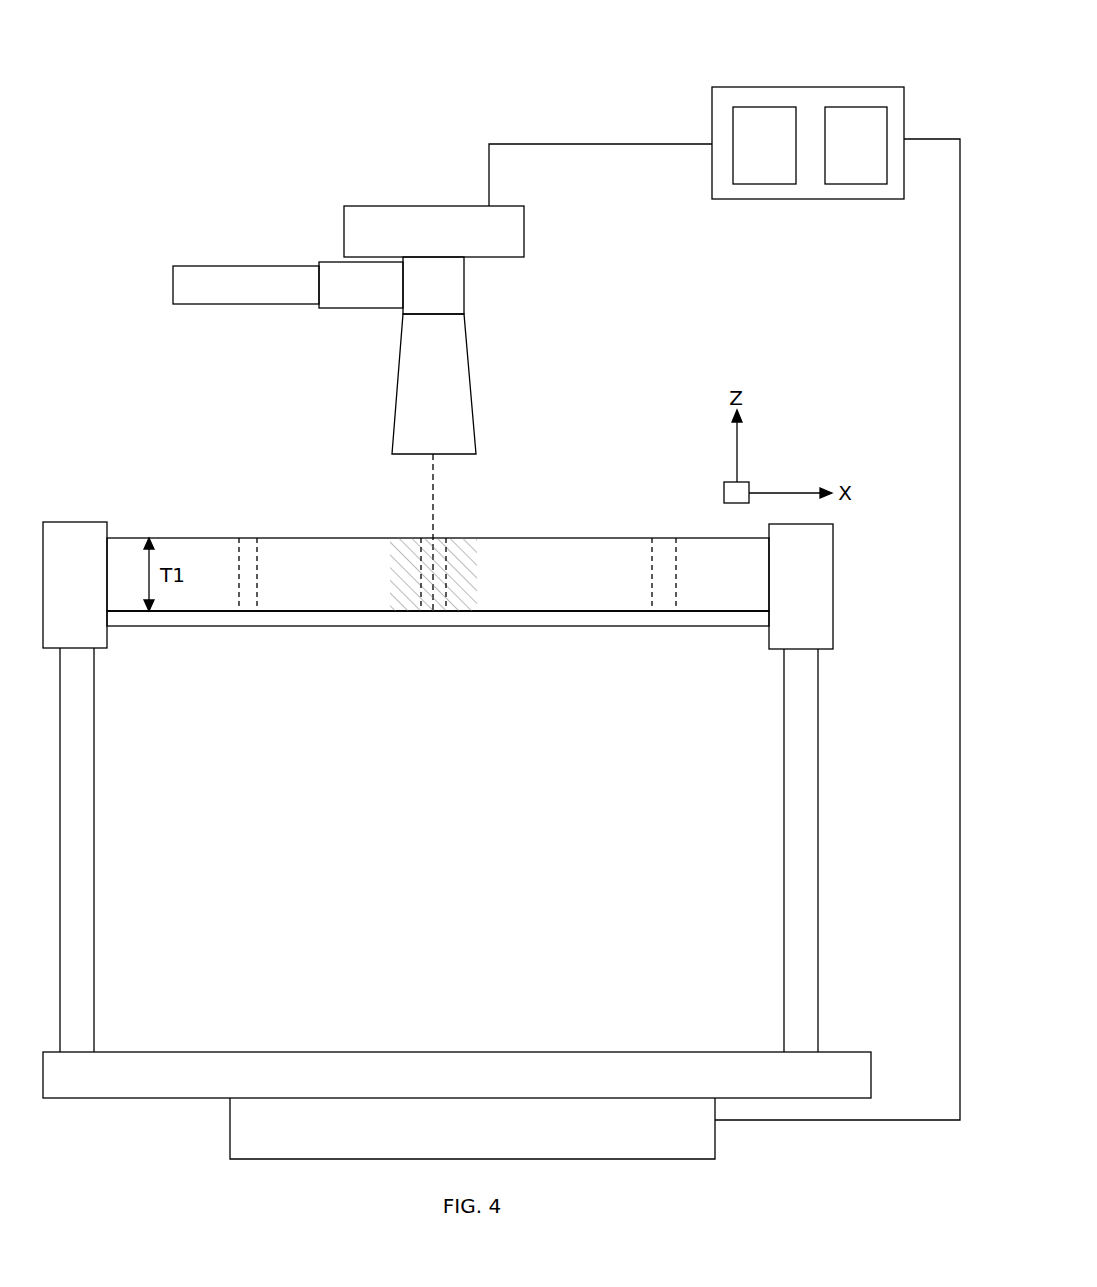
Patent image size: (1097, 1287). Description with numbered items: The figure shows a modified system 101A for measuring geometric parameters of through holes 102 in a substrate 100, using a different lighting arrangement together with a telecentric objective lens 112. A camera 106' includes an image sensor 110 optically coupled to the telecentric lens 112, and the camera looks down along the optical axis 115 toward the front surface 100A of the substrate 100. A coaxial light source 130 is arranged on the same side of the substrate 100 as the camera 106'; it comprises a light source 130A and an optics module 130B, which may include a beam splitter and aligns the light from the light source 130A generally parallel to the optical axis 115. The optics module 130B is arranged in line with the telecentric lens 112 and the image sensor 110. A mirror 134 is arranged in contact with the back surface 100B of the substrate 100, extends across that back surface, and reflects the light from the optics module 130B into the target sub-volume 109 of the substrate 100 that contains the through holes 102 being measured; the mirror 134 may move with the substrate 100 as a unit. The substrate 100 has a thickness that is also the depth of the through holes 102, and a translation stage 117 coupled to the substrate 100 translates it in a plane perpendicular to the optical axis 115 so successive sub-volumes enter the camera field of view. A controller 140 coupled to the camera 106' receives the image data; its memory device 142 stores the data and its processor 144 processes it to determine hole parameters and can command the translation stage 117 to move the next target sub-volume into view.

The modified system 101A is at (403, 158).
The camera 106' is at (567, 214).
The image sensor 110 is at (357, 230).
The telecentric objective lens 112 is at (463, 387).
The optical axis 115 is at (431, 490).
The coaxial light source 130 is at (243, 275).
The light source 130A is at (275, 295).
The optics module 130B is at (458, 288).
The substrate 100 is at (653, 537).
The front surface 100A is at (248, 537).
The back surface 100B is at (287, 613).
The through holes 102 is at (428, 603).
The target sub-volume 109 is at (463, 552).
The mirror 134 is at (505, 620).
The translation stage 117 is at (655, 1150).
The controller 140 is at (795, 86).
The memory device 142 is at (773, 168).
The processor 144 is at (848, 170).